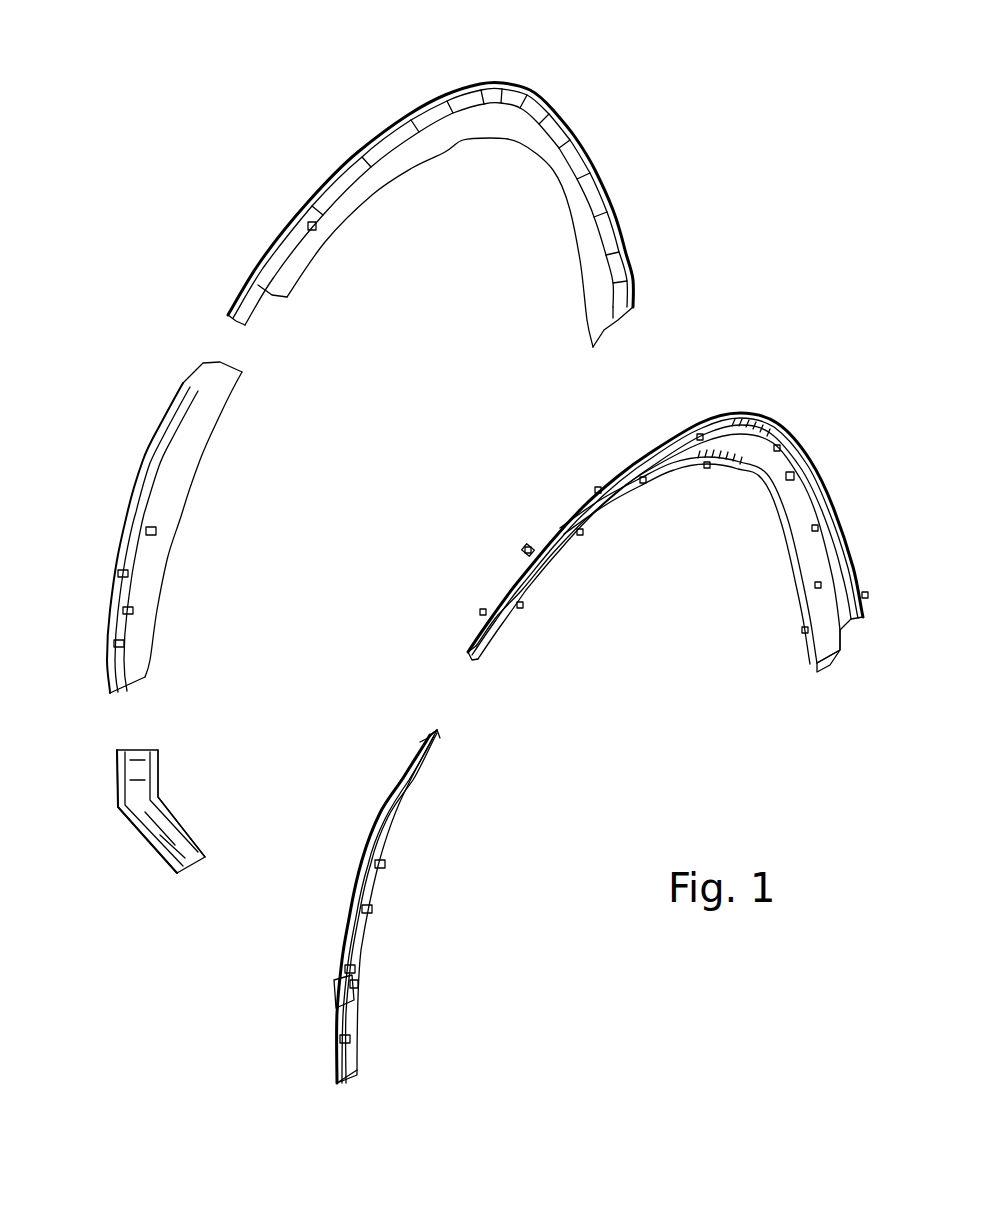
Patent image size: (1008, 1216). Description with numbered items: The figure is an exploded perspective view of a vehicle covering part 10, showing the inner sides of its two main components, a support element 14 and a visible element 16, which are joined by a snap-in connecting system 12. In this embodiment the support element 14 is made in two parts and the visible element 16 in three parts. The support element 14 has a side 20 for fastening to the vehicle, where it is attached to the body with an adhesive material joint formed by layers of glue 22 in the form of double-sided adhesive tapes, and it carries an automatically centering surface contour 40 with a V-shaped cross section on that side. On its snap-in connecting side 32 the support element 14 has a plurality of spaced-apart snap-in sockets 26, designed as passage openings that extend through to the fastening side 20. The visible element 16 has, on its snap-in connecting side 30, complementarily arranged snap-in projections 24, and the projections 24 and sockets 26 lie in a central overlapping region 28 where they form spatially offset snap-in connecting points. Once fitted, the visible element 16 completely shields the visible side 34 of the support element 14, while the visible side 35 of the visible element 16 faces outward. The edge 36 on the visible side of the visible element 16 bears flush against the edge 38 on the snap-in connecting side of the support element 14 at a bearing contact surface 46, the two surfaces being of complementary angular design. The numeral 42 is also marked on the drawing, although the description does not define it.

The vehicle covering part 10 is at (716, 222).
The snap-in connecting system 12 is at (560, 447).
The support element 14 is at (743, 440).
The visible element 16 is at (347, 205).
The side for fastening to the vehicle 20 is at (833, 650).
The layers of glue 22 is at (765, 430).
The snap-in projections 24 is at (580, 190).
The snap-in sockets 26 is at (700, 435).
The central overlapping region 28 is at (314, 232).
The snap-in connecting side of the visible element 30 is at (174, 584).
The snap-in connecting side of the support element 32 is at (383, 757).
The visible side of the support element 34 is at (528, 550).
The visible side of the visible element 35 is at (302, 188).
The edge on the visible side 36 is at (534, 82).
The edge on the snap-in connecting side 38 is at (646, 440).
The automatically centering surface contour 40 is at (470, 655).
The tongue 42 is at (415, 740).
The bearing contact surface 46 is at (656, 432).